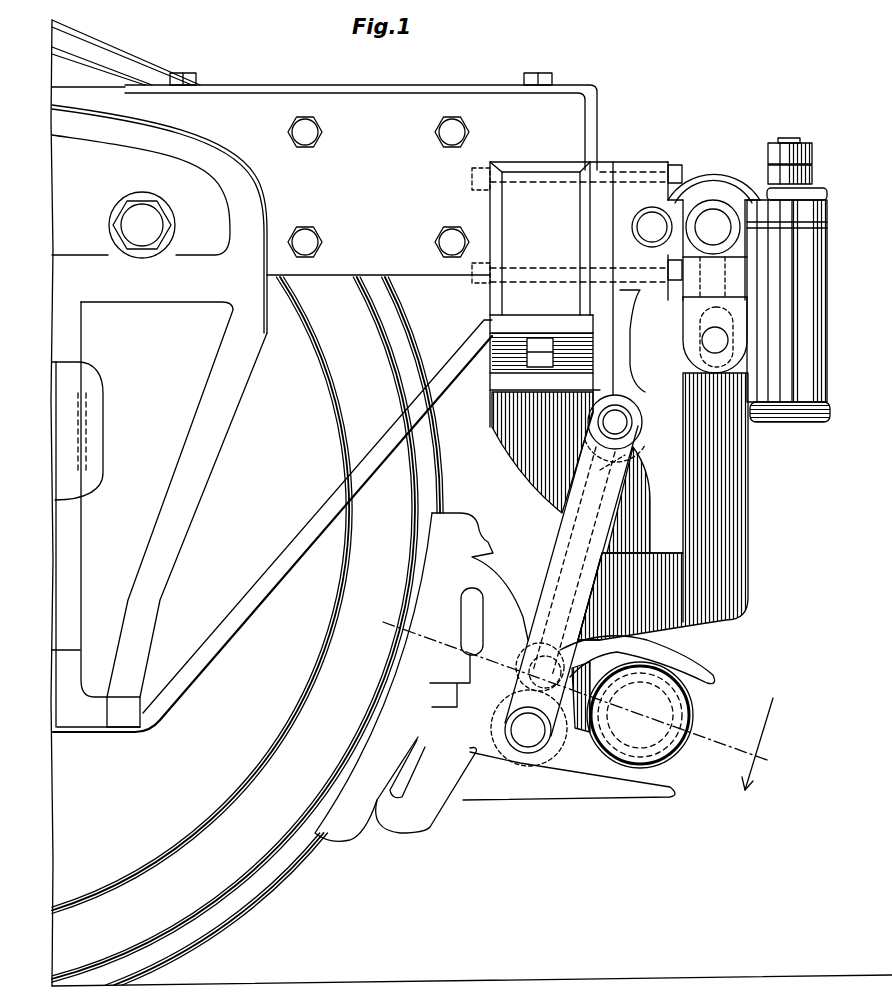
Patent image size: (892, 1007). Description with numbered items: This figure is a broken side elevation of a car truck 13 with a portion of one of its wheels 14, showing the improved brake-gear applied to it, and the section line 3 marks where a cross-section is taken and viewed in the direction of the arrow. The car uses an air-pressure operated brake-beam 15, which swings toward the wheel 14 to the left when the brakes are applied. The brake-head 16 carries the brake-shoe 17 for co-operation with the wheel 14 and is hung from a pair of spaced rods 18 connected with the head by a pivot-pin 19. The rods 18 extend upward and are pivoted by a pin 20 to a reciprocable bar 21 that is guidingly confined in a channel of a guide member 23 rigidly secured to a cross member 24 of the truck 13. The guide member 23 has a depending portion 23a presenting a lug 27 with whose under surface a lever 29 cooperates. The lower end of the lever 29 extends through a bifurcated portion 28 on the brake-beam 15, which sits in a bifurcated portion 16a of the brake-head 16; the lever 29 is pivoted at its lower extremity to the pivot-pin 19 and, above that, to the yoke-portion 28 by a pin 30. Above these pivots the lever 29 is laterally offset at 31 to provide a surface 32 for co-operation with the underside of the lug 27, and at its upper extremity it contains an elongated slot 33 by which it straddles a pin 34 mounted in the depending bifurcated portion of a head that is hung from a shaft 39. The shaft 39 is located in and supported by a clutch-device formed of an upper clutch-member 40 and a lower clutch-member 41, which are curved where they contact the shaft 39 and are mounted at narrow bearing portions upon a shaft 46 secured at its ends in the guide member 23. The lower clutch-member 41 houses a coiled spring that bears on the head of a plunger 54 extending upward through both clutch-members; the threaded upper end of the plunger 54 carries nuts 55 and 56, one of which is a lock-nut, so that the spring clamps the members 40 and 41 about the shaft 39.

The section line 3 is at (580, 706).
The truck 13 is at (361, 174).
The wheel 14 is at (262, 692).
The brake-beam 15 is at (694, 712).
The brake-head 16 is at (448, 772).
The bifurcated portion of the brake-head 16a is at (718, 678).
The brake-shoe 17 is at (390, 742).
The rods 18 is at (582, 510).
The pivot-pin 19 is at (520, 730).
The pin 20 is at (626, 427).
The reciprocable bar 21 is at (637, 395).
The guide member 23 is at (627, 248).
The depending portion 23a is at (522, 447).
The cross member 24 is at (513, 213).
The lug 27 is at (631, 520).
The bifurcated portion 28 is at (574, 561).
The lever 29 is at (748, 545).
The pin 30 is at (532, 667).
The lateral offset 31 is at (672, 610).
The surface 32 is at (606, 563).
The elongated slot 33 is at (705, 327).
The pin 34 is at (712, 340).
The shaft 39 is at (713, 217).
The upper clutch-member 40 is at (754, 192).
The lower clutch-member 41 is at (757, 240).
The shaft 46 is at (652, 207).
The plunger 54 is at (790, 138).
The nut 55 is at (812, 176).
The nut 56 is at (812, 154).